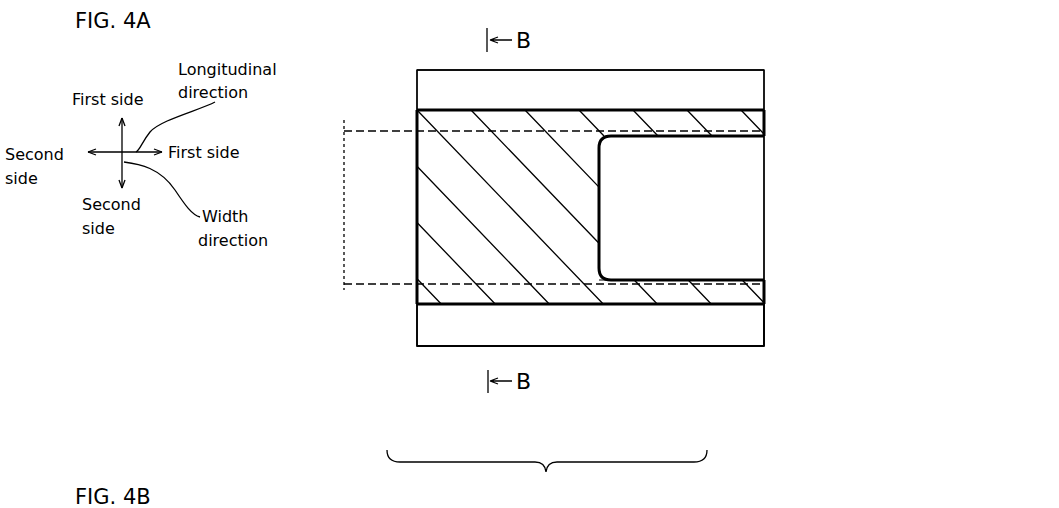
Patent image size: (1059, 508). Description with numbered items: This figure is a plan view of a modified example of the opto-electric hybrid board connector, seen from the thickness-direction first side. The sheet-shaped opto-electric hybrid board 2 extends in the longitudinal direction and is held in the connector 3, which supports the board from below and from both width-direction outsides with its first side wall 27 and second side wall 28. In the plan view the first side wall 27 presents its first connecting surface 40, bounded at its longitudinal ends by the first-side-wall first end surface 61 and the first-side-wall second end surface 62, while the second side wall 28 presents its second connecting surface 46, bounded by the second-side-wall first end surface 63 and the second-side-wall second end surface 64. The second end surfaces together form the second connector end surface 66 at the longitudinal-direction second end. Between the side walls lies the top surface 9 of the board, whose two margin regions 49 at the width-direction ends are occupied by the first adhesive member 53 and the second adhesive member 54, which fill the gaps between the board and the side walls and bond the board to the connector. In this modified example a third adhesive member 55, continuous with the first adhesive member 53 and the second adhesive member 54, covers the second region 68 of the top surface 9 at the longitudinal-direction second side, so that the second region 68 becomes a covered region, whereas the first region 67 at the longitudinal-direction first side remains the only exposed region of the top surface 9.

The opto-electric hybrid board 2 is at (342, 212).
The connector 3 is at (414, 350).
The top surface 9 is at (547, 477).
The first side wall 27 is at (633, 68).
The second side wall 28 is at (577, 352).
The first connecting surface 40 is at (467, 72).
The second connecting surface 46 is at (468, 346).
The margin region 49 is at (746, 143).
The first adhesive member 53 is at (766, 118).
The second adhesive member 54 is at (766, 300).
The third adhesive member 55 is at (416, 188).
The first-side-wall first end surface 61 is at (764, 80).
The first-side-wall second end surface 62 is at (416, 88).
The second-side-wall first end surface 63 is at (766, 322).
The second-side-wall second end surface 64 is at (416, 330).
The second connector end surface 66 is at (414, 115).
The first region 67 is at (705, 228).
The second region 68 is at (452, 262).